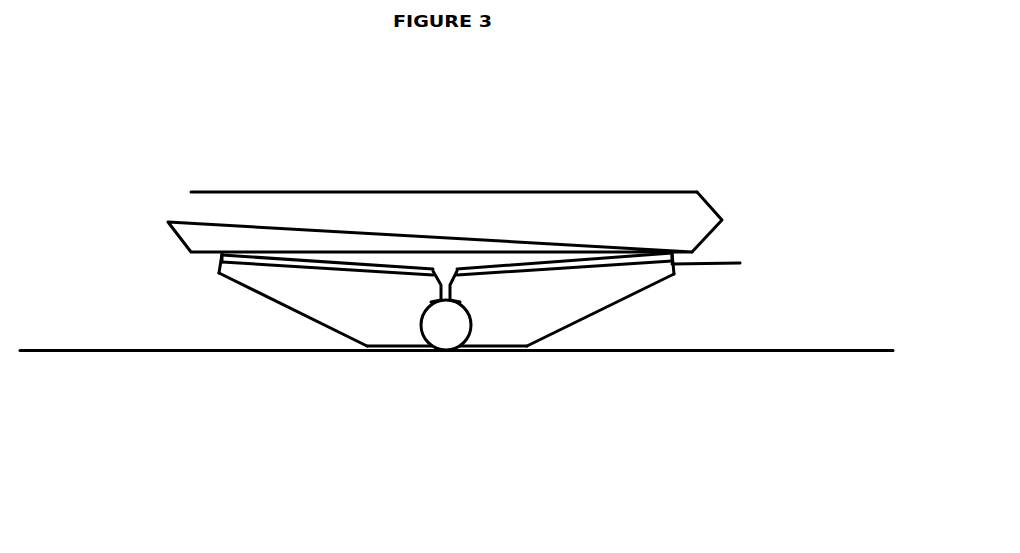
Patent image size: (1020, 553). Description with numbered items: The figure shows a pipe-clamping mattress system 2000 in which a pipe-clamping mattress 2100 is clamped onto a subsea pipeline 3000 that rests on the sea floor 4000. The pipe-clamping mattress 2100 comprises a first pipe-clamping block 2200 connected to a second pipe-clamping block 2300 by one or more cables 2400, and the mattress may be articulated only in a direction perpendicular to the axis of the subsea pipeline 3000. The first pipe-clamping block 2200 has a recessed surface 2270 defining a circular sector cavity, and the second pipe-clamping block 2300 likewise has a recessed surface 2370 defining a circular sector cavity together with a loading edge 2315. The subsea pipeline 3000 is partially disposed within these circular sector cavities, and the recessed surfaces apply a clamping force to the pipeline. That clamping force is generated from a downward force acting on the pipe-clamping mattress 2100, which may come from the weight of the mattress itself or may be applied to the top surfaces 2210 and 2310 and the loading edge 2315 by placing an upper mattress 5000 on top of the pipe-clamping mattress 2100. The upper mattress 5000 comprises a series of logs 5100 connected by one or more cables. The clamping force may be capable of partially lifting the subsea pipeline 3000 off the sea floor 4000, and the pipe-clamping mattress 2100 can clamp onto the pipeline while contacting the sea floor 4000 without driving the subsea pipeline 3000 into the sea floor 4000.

The pipe-clamping mattress system 2000 is at (441, 385).
The pipe-clamping mattress 2100 is at (227, 283).
The first pipe-clamping block 2200 is at (307, 327).
The top surface 2210 is at (280, 263).
The recessed surface 2270 is at (423, 317).
The second pipe-clamping block 2300 is at (574, 329).
The top surface 2310 is at (575, 265).
The recessed surface 2370 is at (477, 318).
The loading edge 2315 is at (220, 256).
The cables 2400 is at (740, 268).
The subsea pipeline 3000 is at (447, 350).
The sea floor 4000 is at (820, 358).
The upper mattress 5000 is at (458, 196).
The logs 5100 is at (712, 195).